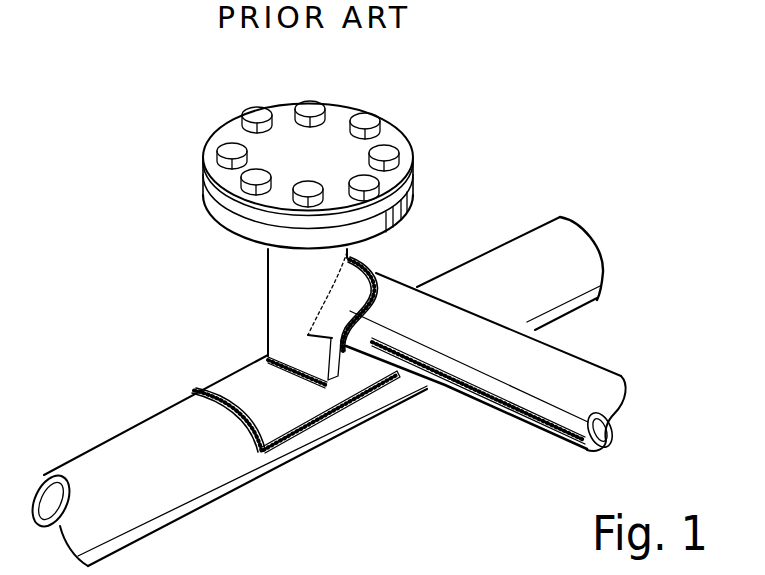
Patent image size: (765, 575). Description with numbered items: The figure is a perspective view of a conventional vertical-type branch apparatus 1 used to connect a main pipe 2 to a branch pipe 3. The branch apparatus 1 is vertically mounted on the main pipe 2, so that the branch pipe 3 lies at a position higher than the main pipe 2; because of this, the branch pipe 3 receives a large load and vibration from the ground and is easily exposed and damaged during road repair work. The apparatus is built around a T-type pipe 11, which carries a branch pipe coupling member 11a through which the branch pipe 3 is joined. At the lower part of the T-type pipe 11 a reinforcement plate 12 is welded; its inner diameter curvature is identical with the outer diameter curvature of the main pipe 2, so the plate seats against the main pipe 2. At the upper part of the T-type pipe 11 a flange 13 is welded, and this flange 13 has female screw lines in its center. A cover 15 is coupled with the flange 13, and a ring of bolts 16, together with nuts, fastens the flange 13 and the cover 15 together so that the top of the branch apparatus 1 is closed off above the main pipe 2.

The branch apparatus 1 is at (229, 312).
The main pipe 2 is at (103, 463).
The branch pipe 3 is at (552, 412).
The T-type pipe 11 is at (267, 274).
The branch pipe coupling member 11a is at (358, 264).
The reinforcement plate 12 is at (290, 402).
The flange 13 is at (245, 228).
The cover 15 is at (340, 163).
The bolts 16 is at (232, 150).